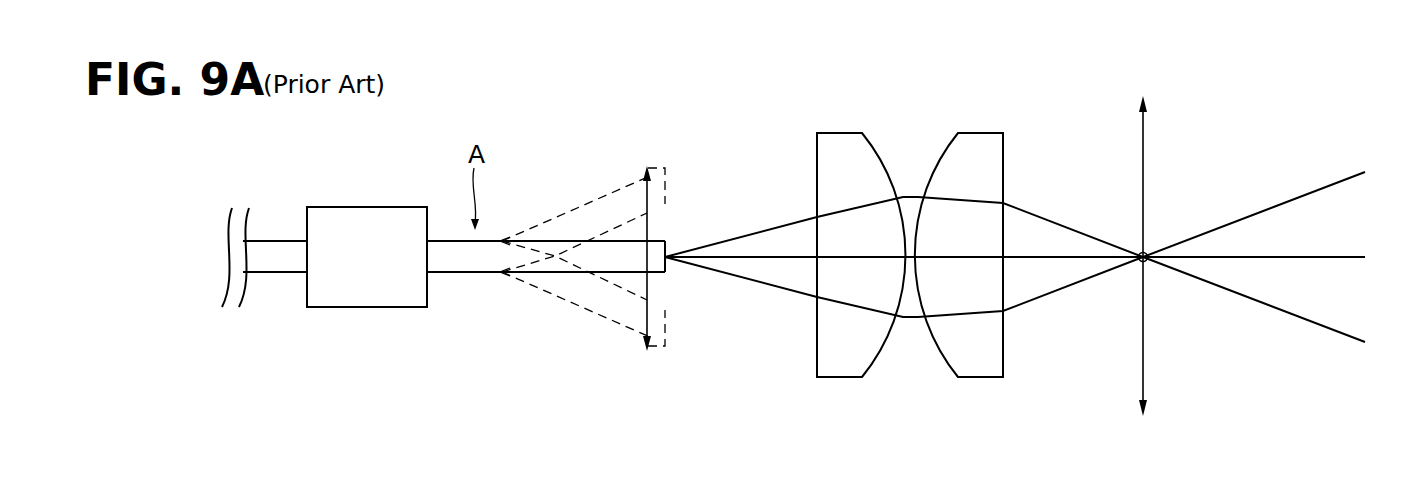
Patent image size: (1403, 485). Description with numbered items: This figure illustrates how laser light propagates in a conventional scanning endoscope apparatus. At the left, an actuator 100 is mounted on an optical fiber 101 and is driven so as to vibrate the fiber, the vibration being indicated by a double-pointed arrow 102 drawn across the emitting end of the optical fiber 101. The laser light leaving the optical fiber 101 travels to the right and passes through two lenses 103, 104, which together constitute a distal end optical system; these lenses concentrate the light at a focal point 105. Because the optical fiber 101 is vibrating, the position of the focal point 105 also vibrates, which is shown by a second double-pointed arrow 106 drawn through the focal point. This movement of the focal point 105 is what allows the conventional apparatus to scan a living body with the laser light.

The actuator 100 is at (368, 207).
The optical fiber 101 is at (657, 240).
The double-pointed arrow 102 is at (648, 290).
The lens 103 is at (840, 133).
The lens 104 is at (980, 133).
The focal point 105 is at (1148, 253).
The double-pointed arrow 106 is at (1145, 168).